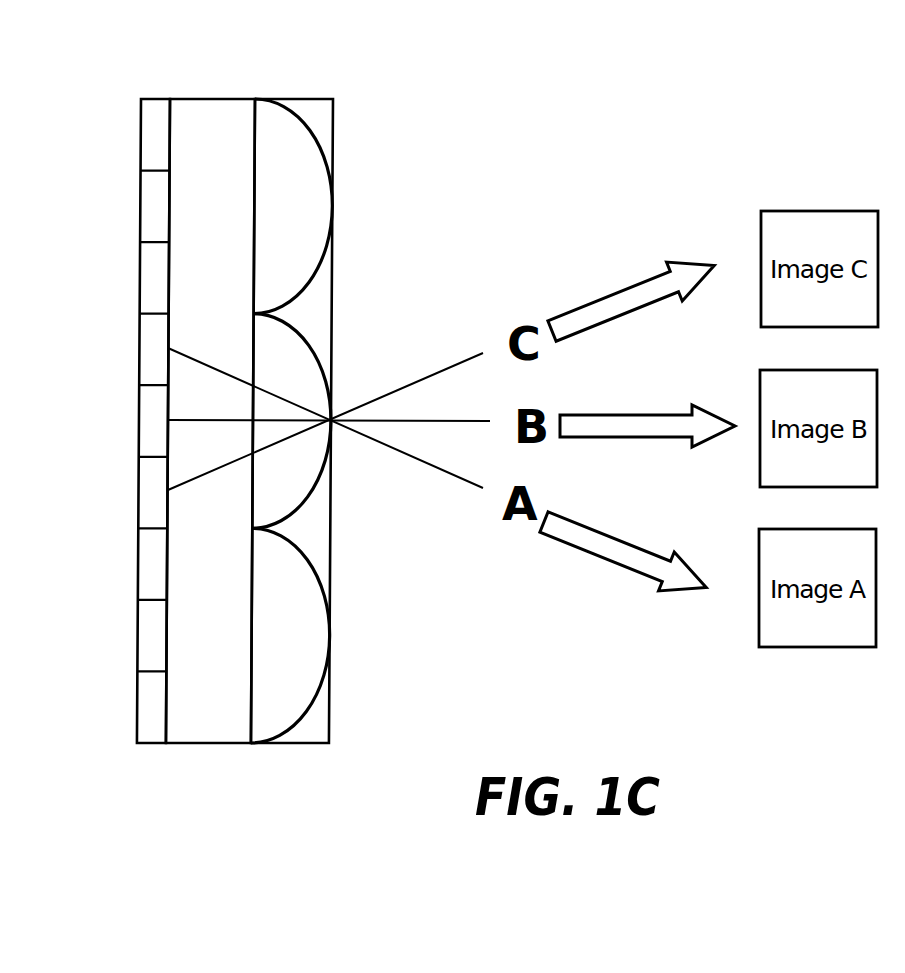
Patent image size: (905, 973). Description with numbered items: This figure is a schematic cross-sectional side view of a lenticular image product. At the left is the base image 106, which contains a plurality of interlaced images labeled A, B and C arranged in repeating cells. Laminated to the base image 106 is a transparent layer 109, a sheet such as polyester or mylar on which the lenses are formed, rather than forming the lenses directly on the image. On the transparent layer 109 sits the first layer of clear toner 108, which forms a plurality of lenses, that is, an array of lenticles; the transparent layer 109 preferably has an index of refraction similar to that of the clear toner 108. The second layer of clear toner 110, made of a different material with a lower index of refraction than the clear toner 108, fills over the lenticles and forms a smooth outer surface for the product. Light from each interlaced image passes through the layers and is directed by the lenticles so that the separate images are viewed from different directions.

The base image 106 is at (152, 99).
The first layer of clear toner 108 is at (304, 290).
The transparent layer 109 is at (202, 99).
The second layer of clear toner 110 is at (334, 116).